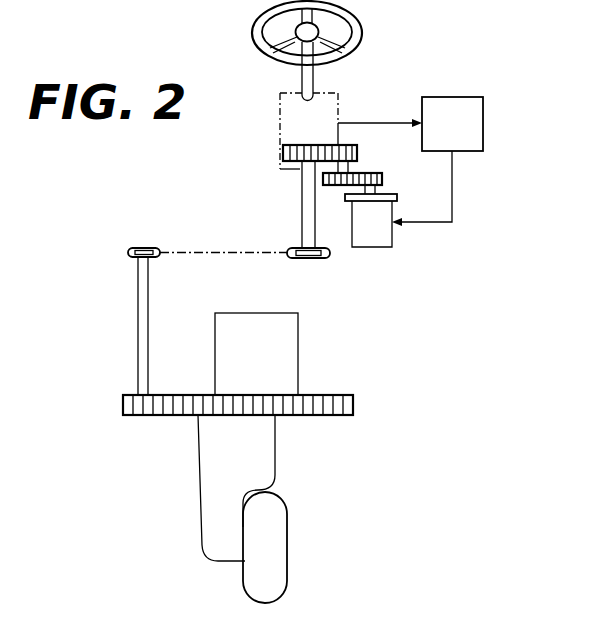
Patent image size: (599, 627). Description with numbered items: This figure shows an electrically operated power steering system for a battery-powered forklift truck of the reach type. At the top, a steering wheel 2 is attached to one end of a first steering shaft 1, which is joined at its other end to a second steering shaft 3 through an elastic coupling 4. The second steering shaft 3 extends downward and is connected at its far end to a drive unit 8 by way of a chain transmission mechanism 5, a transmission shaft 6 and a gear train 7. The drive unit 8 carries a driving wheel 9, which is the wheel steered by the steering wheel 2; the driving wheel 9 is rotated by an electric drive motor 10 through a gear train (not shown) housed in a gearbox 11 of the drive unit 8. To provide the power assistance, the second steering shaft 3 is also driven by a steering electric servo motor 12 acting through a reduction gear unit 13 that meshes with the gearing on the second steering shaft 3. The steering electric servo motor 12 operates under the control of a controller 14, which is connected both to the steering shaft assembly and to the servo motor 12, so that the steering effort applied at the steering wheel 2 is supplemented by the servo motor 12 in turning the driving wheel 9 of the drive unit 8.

The first steering shaft 1 is at (302, 77).
The steering wheel 2 is at (258, 31).
The second steering shaft 3 is at (302, 206).
The elastic coupling 4 is at (283, 138).
The chain transmission mechanism 5 is at (181, 242).
The transmission shaft 6 is at (140, 305).
The gear train 7 is at (155, 424).
The drive unit 8 is at (312, 376).
The driving wheel 9 is at (280, 546).
The electric drive motor 10 is at (222, 350).
The gearbox 11 is at (208, 480).
The steering electric servo motor 12 is at (374, 242).
The reduction gear unit 13 is at (378, 167).
The controller 14 is at (477, 117).